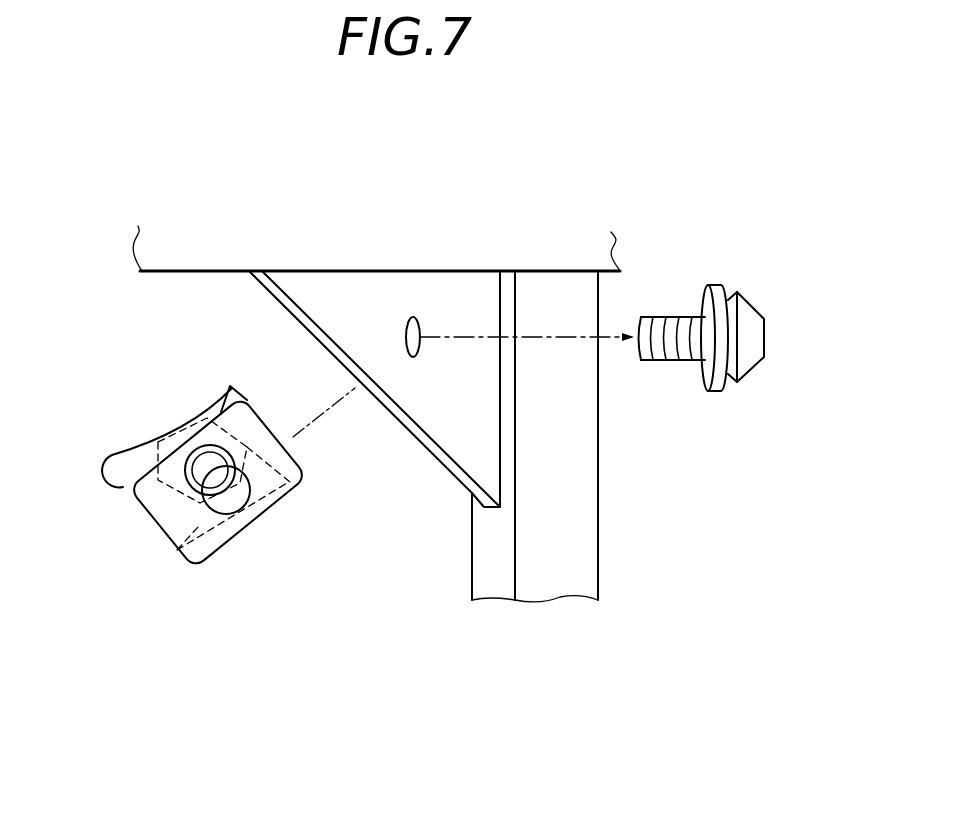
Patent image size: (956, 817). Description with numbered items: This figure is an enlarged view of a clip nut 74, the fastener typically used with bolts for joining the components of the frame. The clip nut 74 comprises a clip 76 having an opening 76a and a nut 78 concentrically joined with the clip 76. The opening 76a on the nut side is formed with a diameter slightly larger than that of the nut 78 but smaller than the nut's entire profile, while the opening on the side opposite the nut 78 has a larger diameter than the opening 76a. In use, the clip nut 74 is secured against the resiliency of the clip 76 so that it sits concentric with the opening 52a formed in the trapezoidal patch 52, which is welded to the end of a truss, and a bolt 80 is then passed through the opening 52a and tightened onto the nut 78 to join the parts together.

The trapezoidal patch 52 is at (305, 303).
The opening 52a is at (417, 353).
The clip nut 74 is at (143, 533).
The clip 76 is at (303, 486).
The opening 76a is at (266, 500).
The nut 78 is at (210, 427).
The bolt 80 is at (752, 320).